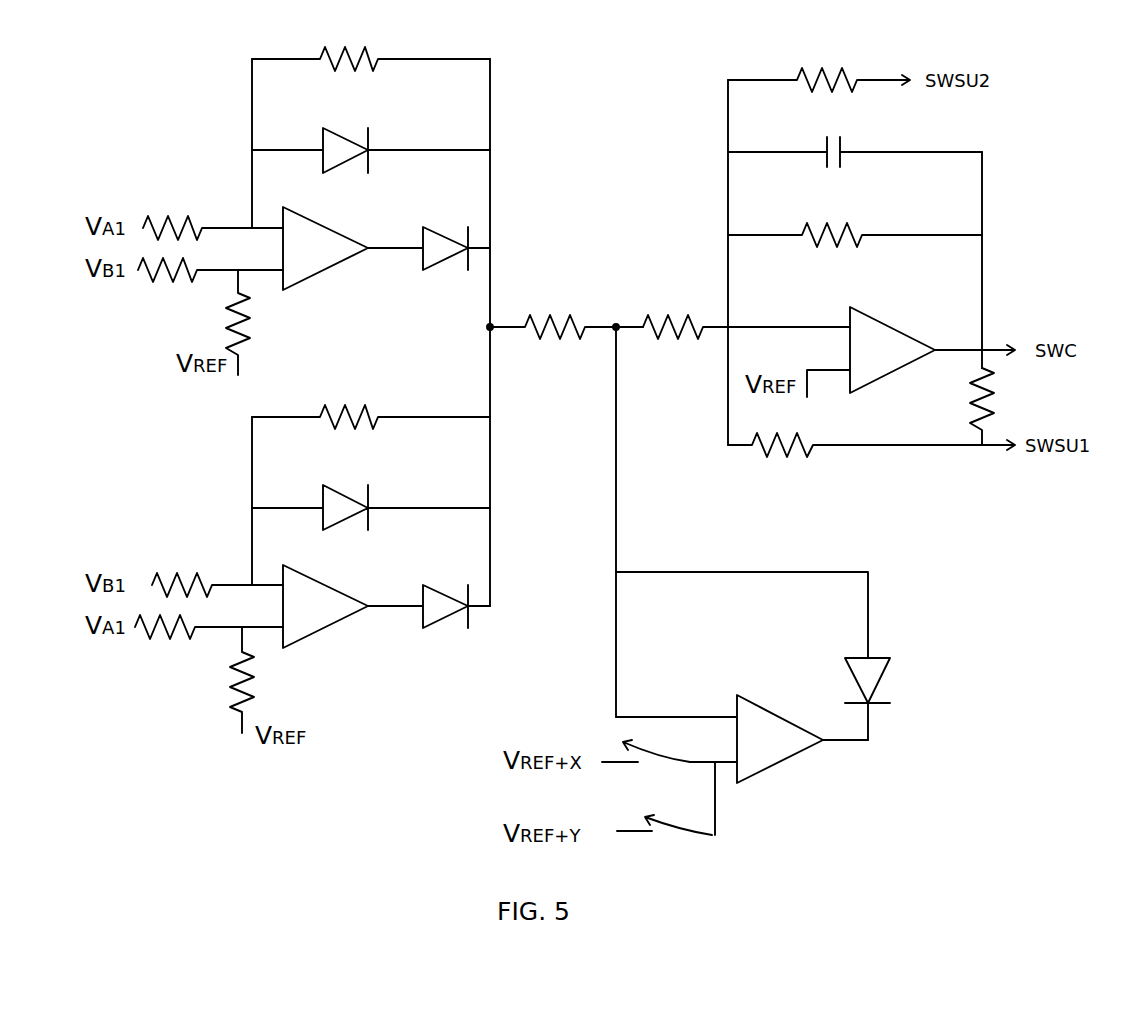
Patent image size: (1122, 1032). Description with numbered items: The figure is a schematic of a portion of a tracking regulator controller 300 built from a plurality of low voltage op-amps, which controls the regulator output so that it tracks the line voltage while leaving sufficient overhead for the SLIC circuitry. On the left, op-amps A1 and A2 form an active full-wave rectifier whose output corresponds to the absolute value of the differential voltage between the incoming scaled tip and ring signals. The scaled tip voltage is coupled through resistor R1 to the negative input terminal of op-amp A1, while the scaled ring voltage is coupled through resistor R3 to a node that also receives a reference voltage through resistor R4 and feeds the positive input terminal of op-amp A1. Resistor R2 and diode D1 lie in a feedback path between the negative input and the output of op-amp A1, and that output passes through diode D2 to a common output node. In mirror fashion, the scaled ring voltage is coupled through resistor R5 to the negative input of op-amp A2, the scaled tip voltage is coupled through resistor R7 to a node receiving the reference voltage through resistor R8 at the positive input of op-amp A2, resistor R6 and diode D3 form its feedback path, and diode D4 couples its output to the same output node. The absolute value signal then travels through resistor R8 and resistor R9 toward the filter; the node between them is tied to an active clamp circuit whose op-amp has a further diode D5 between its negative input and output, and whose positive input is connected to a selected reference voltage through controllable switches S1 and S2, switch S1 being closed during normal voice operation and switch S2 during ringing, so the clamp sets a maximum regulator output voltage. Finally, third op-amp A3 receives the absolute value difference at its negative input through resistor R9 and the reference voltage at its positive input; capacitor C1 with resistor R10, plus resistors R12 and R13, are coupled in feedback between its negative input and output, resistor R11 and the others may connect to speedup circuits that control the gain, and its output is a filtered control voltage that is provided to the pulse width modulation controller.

The controller 300 is at (177, 845).
The resistor R1 is at (213, 216).
The resistor R2 is at (371, 49).
The resistor R3 is at (210, 259).
The resistor R4 is at (253, 322).
The resistor R5 is at (217, 574).
The resistor R6 is at (371, 406).
The resistor R7 is at (209, 638).
The resistor R8 is at (436, 511).
The resistor R9 is at (746, 314).
The resistor R10 is at (855, 245).
The resistor R11 is at (819, 66).
The resistor R12 is at (871, 459).
The resistor R13 is at (1004, 406).
The diode D1 is at (371, 138).
The diode D2 is at (429, 236).
The diode D3 is at (371, 496).
The diode D4 is at (429, 619).
The diode D5 is at (769, 656).
The op-amp A1 is at (575, 521).
The op-amp A2 is at (325, 606).
The third op-amp A3 is at (911, 352).
The capacitor C1 is at (855, 140).
The controllable switch S1 is at (649, 745).
The controllable switch S2 is at (664, 810).